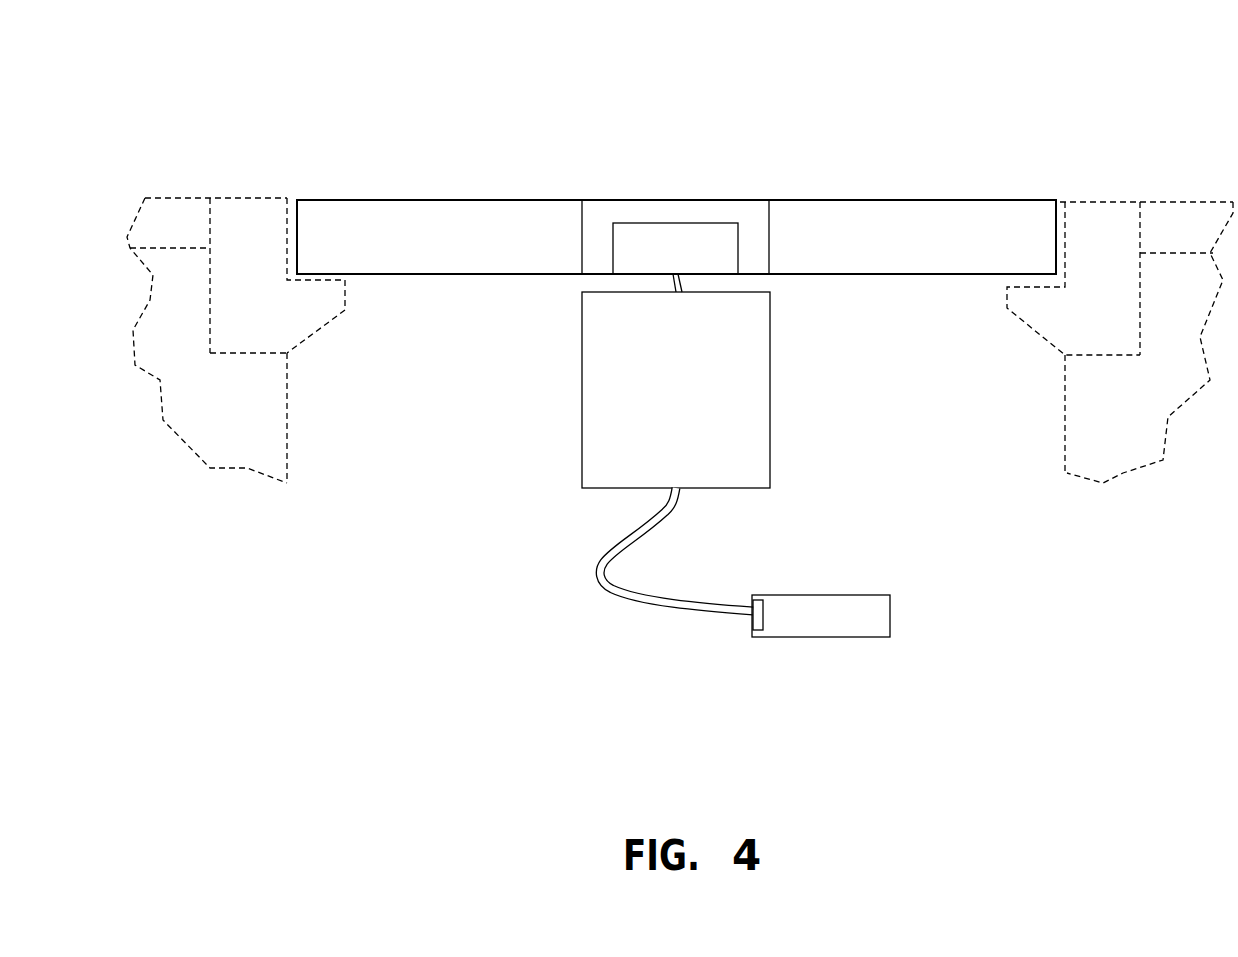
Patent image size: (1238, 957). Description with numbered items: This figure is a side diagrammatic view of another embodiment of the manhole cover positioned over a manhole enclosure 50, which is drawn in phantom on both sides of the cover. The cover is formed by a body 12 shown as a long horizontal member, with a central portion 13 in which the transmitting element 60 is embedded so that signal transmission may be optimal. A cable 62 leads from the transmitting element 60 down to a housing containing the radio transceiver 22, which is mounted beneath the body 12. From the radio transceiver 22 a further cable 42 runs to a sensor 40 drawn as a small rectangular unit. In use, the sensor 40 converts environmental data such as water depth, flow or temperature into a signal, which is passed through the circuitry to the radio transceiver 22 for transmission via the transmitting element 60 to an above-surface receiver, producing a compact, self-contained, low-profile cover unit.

The vehicle body structure (phantom) 50 is at (186, 196).
The body 12 is at (973, 200).
The mounting section 13 is at (600, 217).
The transmitting element 60 is at (702, 222).
The cable 62 is at (676, 283).
The radio transceiver 22 is at (770, 365).
The cable 42 is at (650, 603).
The sensors 40 is at (827, 637).